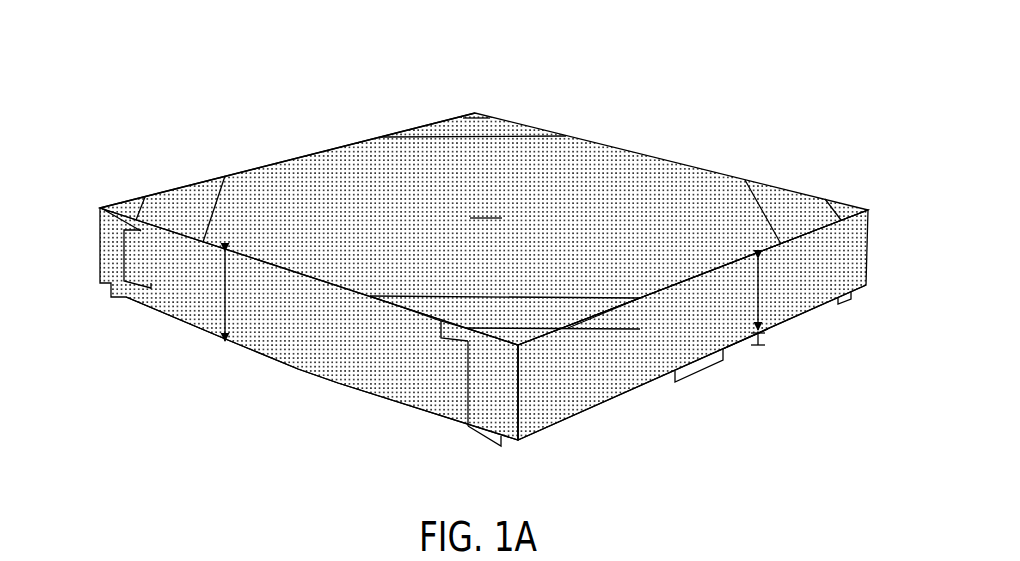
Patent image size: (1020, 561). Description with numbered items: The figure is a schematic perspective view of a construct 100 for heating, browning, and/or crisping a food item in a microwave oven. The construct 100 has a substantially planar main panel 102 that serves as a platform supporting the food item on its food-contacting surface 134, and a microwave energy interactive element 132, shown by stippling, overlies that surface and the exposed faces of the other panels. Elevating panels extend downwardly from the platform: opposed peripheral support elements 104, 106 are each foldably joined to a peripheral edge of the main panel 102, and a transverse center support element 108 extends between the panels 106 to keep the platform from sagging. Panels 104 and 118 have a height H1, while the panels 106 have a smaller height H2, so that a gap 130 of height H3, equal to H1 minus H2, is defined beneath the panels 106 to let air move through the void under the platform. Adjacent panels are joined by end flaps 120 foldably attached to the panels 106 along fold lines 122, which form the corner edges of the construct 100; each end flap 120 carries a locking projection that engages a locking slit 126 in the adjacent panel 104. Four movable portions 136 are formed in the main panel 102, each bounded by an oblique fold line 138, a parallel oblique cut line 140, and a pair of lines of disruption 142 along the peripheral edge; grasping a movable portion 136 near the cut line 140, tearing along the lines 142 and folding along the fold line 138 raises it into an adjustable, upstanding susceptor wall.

The construct 100 is at (484, 233).
The main panel 102 is at (595, 150).
The peripheral support element 104 is at (268, 330).
The peripheral support element 106 is at (637, 372).
The center support element 108 is at (726, 354).
The panel 118 is at (690, 360).
The end flap 120 is at (100, 266).
The fold line 122 is at (512, 392).
The locking slit 126 is at (433, 395).
The gap 130 is at (590, 408).
The microwave energy interactive element 132 is at (285, 165).
The food-contacting surface 134 is at (486, 207).
The movable portion 136 is at (500, 122).
The oblique fold line 138 is at (615, 275).
The oblique cut line 140 is at (516, 322).
The line of disruption 142 is at (396, 298).
The height H1 is at (240, 296).
The height H2 is at (774, 294).
The gap height H3 is at (775, 341).